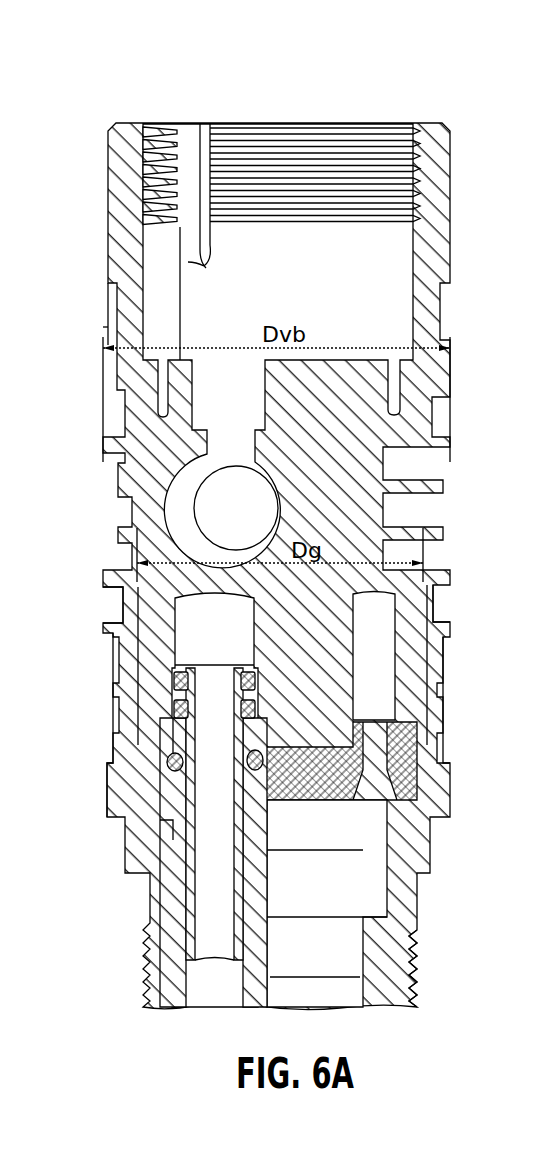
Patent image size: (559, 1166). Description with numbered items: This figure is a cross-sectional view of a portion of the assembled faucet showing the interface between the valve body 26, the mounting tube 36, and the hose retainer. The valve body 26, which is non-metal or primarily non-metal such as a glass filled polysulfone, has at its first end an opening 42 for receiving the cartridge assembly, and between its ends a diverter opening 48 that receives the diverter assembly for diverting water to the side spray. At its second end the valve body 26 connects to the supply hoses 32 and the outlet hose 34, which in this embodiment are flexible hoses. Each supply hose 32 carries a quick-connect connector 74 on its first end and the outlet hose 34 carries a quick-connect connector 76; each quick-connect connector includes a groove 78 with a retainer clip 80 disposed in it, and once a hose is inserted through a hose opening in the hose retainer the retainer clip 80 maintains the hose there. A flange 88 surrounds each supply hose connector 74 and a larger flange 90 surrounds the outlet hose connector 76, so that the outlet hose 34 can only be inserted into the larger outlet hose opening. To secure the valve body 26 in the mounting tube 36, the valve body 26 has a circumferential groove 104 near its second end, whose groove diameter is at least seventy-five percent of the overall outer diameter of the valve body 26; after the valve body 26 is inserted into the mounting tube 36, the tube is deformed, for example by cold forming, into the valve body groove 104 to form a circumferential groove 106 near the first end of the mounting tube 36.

The valve body 26 is at (448, 110).
The opening 42 is at (289, 127).
The diverter opening 48 is at (228, 506).
The circumferential groove 104 is at (117, 689).
The circumferential groove 106 is at (445, 698).
The groove 78 is at (172, 774).
The retainer clip 80 is at (266, 760).
The flange 90 is at (167, 816).
The flange 88 is at (326, 812).
The connector 74 is at (330, 893).
The connector 76 is at (160, 863).
The mounting tube 36 is at (432, 978).
The outlet hose 34 is at (211, 990).
The supply hose 32 is at (320, 996).